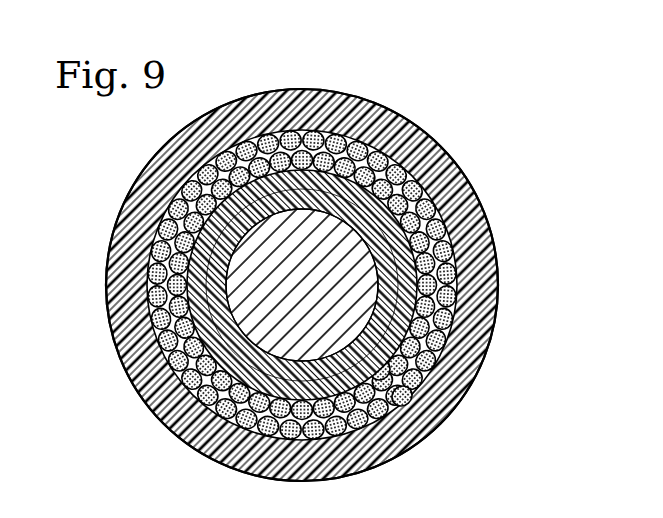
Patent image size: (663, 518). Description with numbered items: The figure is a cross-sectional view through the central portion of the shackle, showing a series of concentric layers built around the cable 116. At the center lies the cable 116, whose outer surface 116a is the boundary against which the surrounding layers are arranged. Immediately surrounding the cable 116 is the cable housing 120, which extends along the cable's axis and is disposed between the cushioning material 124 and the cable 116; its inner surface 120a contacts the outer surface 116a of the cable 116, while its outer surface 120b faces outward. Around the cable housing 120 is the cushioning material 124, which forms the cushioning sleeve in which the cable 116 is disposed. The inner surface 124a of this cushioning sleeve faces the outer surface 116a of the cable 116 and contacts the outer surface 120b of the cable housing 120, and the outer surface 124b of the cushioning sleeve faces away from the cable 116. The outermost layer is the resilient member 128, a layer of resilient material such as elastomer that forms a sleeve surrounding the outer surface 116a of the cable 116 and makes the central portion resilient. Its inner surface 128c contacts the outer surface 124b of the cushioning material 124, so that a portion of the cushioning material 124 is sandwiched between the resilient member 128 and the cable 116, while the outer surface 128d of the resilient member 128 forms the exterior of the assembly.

The cable 116 is at (319, 212).
The outer surface of cable 116a is at (331, 216).
The cable housing 120 is at (370, 256).
The inner surface of cable housing 120a is at (366, 254).
The outer surface of cable housing 120b is at (420, 285).
The cushioning material 124 is at (347, 315).
The inner surface of cushioning sleeve 124a is at (380, 372).
The outer surface of cushioning sleeve 124b is at (410, 400).
The resilient member 128 is at (302, 302).
The inner surface of resilient member 128c is at (200, 404).
The outer surface of resilient member 128d is at (283, 479).